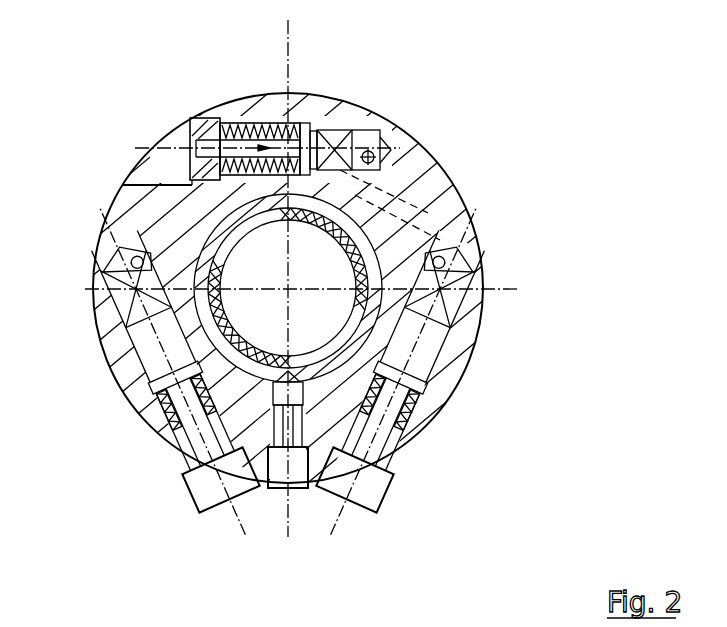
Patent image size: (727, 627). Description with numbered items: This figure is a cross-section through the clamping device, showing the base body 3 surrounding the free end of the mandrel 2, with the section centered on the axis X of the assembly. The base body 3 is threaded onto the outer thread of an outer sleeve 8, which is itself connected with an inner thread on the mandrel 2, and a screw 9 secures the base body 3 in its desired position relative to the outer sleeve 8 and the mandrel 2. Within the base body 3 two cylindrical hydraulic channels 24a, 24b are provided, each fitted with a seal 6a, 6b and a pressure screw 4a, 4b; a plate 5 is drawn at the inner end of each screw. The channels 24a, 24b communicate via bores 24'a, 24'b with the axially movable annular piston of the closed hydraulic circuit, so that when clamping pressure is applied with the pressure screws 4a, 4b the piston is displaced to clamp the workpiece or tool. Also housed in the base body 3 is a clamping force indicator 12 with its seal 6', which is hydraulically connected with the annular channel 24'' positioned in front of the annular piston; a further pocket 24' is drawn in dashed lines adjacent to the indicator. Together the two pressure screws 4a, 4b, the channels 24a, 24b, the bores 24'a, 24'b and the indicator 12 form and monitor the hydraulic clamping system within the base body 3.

The mandrel 2 is at (248, 297).
The base body 3 is at (193, 230).
The pressure screw 4a is at (205, 487).
The pressure screw 4b is at (347, 475).
The pressure plate 5 is at (163, 372).
The seal 6a is at (148, 347).
The seal 6b is at (425, 385).
The seal 6' is at (382, 85).
The outer sleeve 8 is at (193, 232).
The screw 9 is at (302, 428).
The clamping force indicator 12 is at (259, 130).
The wedge pocket 24' is at (457, 125).
The annular channel 24'' is at (469, 163).
The bore 24'a is at (82, 251).
The hydraulic channel 24a is at (120, 282).
The bore 24'b is at (513, 268).
The hydraulic channel 24b is at (448, 307).
The chuck axis X is at (290, 287).